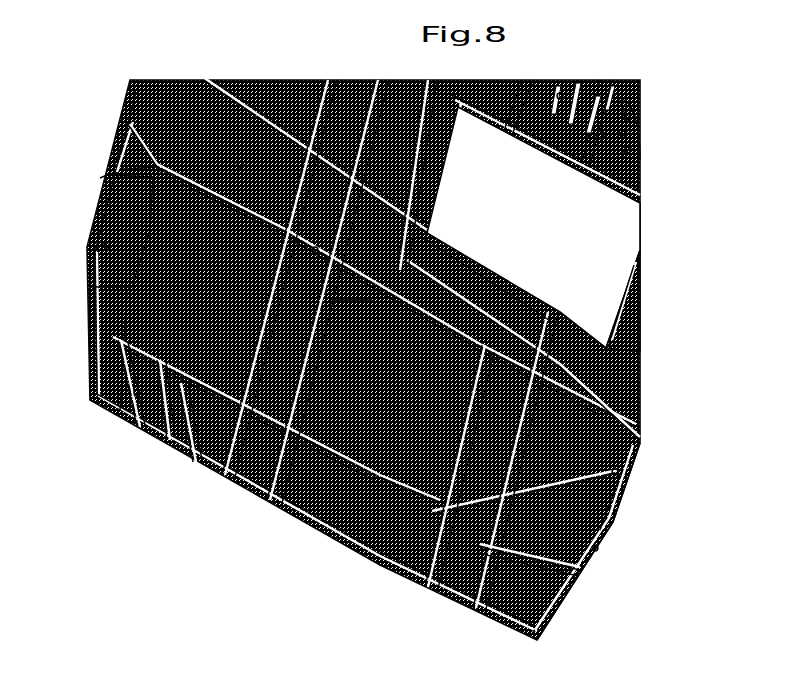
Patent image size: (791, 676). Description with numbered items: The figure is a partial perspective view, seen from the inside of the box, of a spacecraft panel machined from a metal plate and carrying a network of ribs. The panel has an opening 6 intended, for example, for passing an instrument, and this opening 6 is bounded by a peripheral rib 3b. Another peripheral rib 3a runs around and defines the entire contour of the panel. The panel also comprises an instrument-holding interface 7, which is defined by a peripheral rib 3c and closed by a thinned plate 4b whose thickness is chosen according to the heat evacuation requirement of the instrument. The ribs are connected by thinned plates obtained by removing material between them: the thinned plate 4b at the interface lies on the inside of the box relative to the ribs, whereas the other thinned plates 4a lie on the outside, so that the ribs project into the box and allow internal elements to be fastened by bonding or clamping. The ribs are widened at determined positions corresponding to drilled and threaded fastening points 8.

The opening 6 is at (548, 220).
The peripheral rib 3a is at (613, 525).
The peripheral rib 3b is at (626, 298).
The peripheral rib 3c is at (572, 574).
The thinned plate 4a is at (190, 458).
The thinned plate 4b is at (238, 487).
The instrument-holding interface 7 is at (350, 395).
The drilled and threaded fastening points 8 is at (385, 412).